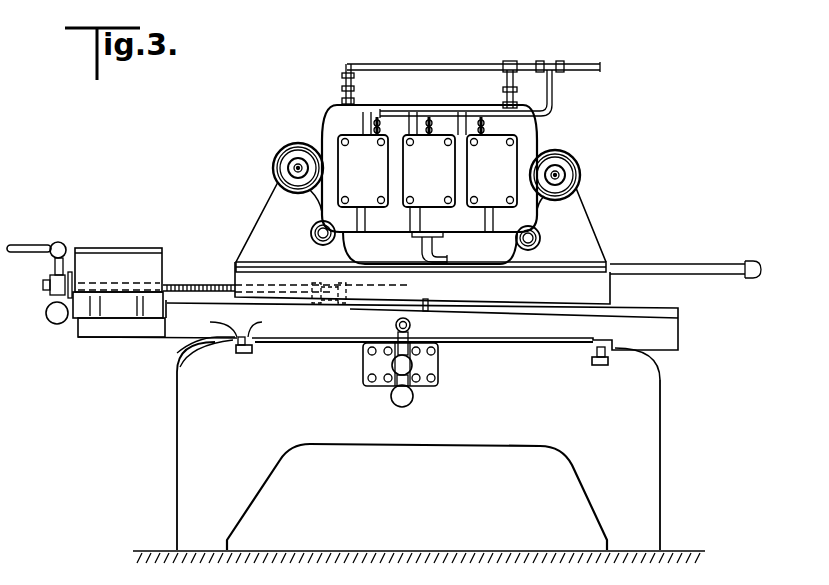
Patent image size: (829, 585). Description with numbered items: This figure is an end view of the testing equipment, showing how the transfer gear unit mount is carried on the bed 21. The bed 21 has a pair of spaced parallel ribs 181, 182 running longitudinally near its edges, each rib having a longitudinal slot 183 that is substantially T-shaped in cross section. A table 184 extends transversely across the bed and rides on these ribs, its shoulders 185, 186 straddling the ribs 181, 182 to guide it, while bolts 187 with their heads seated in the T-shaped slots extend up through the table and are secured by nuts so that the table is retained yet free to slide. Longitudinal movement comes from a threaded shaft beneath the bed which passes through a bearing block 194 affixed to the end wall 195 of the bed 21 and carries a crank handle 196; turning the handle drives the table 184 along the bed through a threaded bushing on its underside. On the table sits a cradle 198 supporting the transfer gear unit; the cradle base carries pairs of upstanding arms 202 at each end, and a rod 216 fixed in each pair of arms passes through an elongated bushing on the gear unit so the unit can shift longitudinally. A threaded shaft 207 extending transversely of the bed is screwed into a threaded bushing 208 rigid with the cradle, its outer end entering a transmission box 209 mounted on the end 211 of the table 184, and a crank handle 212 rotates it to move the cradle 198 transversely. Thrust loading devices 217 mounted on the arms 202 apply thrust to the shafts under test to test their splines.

The bed 21 is at (170, 441).
The rib 181 is at (206, 324).
The rib 182 is at (602, 345).
The longitudinal slot 183 is at (255, 348).
The table 184 is at (492, 330).
The shoulder 185 is at (182, 349).
The shoulder 186 is at (648, 350).
The bolts 187 is at (276, 324).
The bearing block 194 is at (427, 384).
The end wall 195 is at (337, 428).
The crank handle 196 is at (398, 408).
The cradle 198 is at (610, 239).
The upstanding arm 202 is at (278, 198).
The threaded shaft 207 is at (263, 290).
The threaded bushing 208 is at (333, 303).
The transmission box 209 is at (120, 260).
The end of table 211 is at (103, 336).
The crank handle 212 is at (58, 242).
The rod 216 is at (311, 234).
The thrust loading device 217 is at (287, 140).